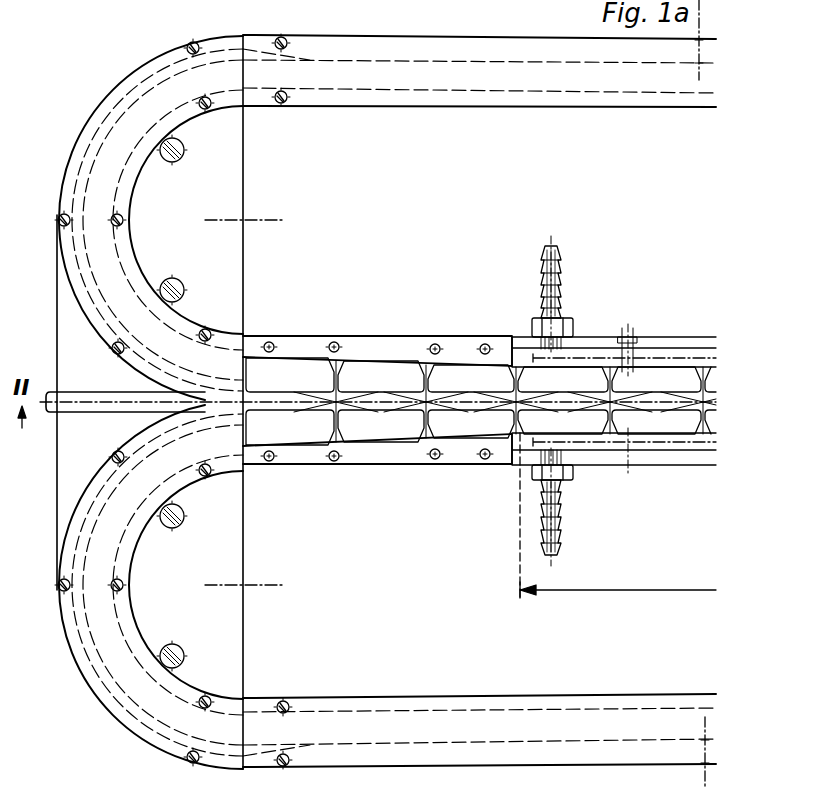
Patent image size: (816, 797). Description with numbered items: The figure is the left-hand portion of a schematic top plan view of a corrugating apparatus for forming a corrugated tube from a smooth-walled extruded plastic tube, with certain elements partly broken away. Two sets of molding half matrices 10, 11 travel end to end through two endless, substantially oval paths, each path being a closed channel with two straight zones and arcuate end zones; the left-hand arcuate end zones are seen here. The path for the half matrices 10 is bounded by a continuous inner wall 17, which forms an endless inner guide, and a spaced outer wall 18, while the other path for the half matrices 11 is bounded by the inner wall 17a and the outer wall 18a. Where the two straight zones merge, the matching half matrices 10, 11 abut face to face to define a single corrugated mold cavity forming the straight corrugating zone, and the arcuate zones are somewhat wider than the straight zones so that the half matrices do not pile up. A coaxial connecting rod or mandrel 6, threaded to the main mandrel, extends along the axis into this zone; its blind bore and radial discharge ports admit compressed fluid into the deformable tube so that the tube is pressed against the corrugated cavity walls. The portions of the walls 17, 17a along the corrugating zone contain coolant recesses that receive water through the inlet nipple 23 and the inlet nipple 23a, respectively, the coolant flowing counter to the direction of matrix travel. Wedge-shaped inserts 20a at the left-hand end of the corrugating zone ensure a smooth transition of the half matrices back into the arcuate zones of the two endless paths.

The connecting rod 6 is at (122, 405).
The half matrices 10 is at (672, 380).
The half matrices 11 is at (663, 420).
The inner wall 17 is at (590, 100).
The inner wall 17a is at (680, 438).
The outer wall 18 is at (552, 53).
The outer wall 18a is at (643, 738).
The wedge-shaped inserts 20a is at (298, 405).
The inlet nipple 23 is at (538, 253).
The inlet nipple 23a is at (562, 543).